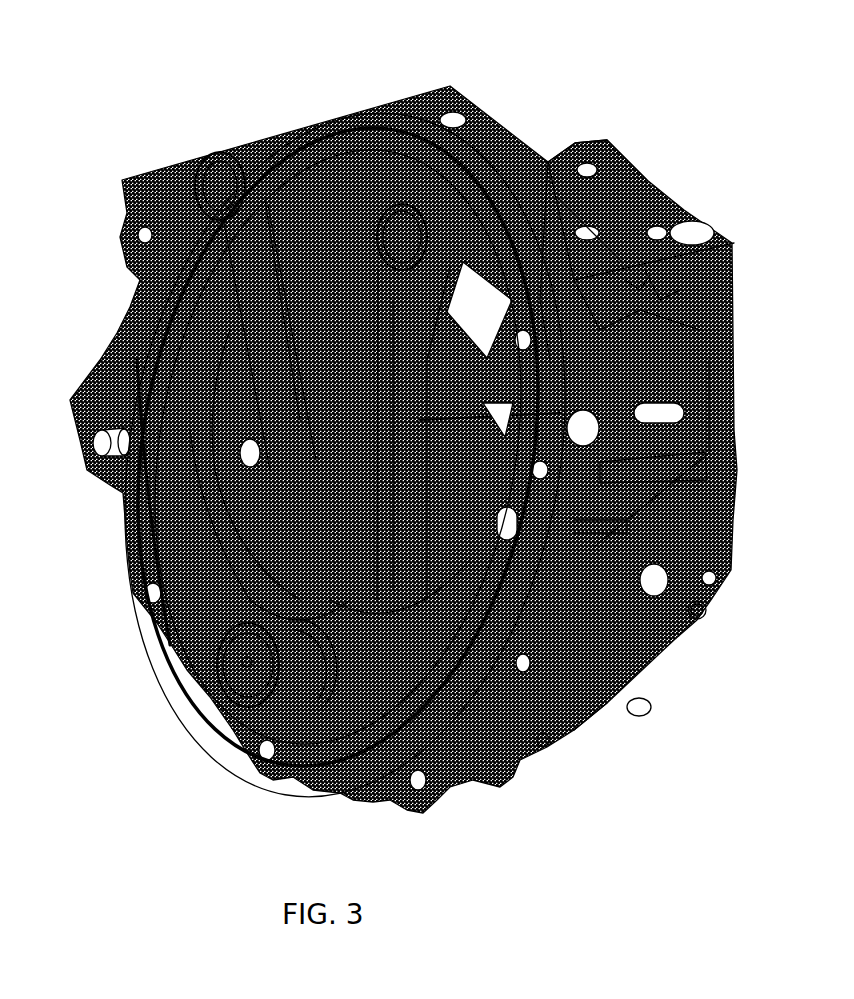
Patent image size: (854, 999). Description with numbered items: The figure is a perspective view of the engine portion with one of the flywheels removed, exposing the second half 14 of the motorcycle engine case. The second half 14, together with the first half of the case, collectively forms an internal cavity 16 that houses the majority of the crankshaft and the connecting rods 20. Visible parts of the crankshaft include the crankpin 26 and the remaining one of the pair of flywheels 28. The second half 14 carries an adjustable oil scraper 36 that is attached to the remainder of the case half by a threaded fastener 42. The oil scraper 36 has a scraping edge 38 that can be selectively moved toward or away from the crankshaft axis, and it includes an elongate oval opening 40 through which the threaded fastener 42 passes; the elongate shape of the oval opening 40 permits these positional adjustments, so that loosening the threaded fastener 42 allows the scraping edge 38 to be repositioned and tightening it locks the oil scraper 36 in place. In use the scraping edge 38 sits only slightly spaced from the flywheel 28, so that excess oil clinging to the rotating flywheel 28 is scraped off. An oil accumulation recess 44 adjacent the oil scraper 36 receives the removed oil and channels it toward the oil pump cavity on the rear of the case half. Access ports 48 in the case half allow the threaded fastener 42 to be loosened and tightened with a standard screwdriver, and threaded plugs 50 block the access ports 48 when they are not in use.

The second half 14 is at (430, 100).
The internal cavity 16 is at (170, 647).
The connecting rods 20 is at (470, 420).
The crankpin 26 is at (270, 783).
The flywheels 28 is at (477, 780).
The oil scraper 36 is at (537, 160).
The scraping edge 38 is at (543, 747).
The oval opening 40 is at (604, 703).
The threaded fastener 42 is at (632, 270).
The oil accumulation recess 44 is at (652, 265).
The access ports 48 is at (697, 620).
The threaded plugs 50 is at (697, 620).